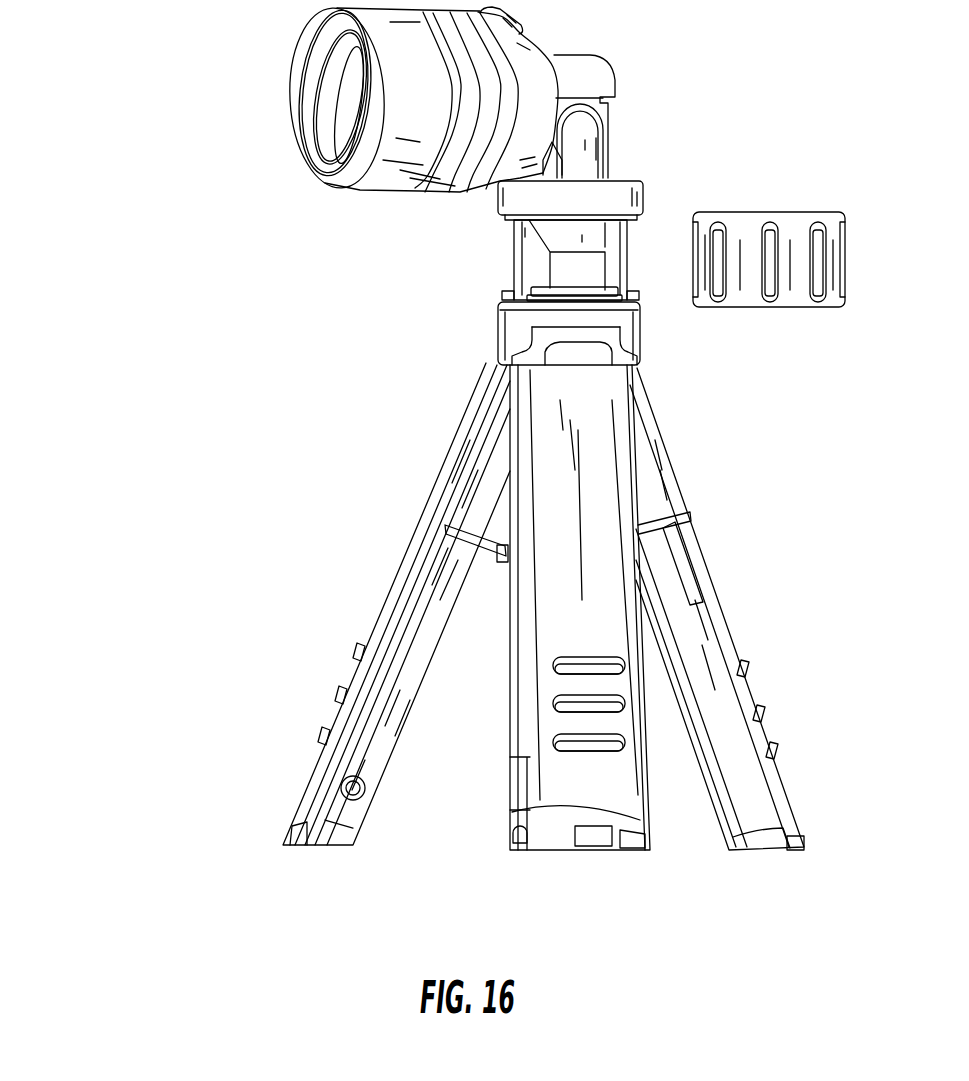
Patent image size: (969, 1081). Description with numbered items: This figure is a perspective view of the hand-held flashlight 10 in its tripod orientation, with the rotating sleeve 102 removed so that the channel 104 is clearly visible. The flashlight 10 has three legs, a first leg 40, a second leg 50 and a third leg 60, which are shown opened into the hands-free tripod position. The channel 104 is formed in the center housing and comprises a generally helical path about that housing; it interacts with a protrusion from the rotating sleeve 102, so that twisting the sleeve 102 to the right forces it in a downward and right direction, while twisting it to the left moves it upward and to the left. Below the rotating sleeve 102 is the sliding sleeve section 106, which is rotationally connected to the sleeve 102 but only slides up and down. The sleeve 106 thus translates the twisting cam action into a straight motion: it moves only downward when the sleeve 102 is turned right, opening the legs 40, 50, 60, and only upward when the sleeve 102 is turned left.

The hand-held flashlight 10 is at (95, 300).
The first leg 40 is at (380, 617).
The second leg 50 is at (645, 797).
The third leg 60 is at (730, 715).
The rotating sleeve section 102 is at (803, 215).
The channel 104 is at (543, 247).
The sliding sleeve section 106 is at (513, 328).